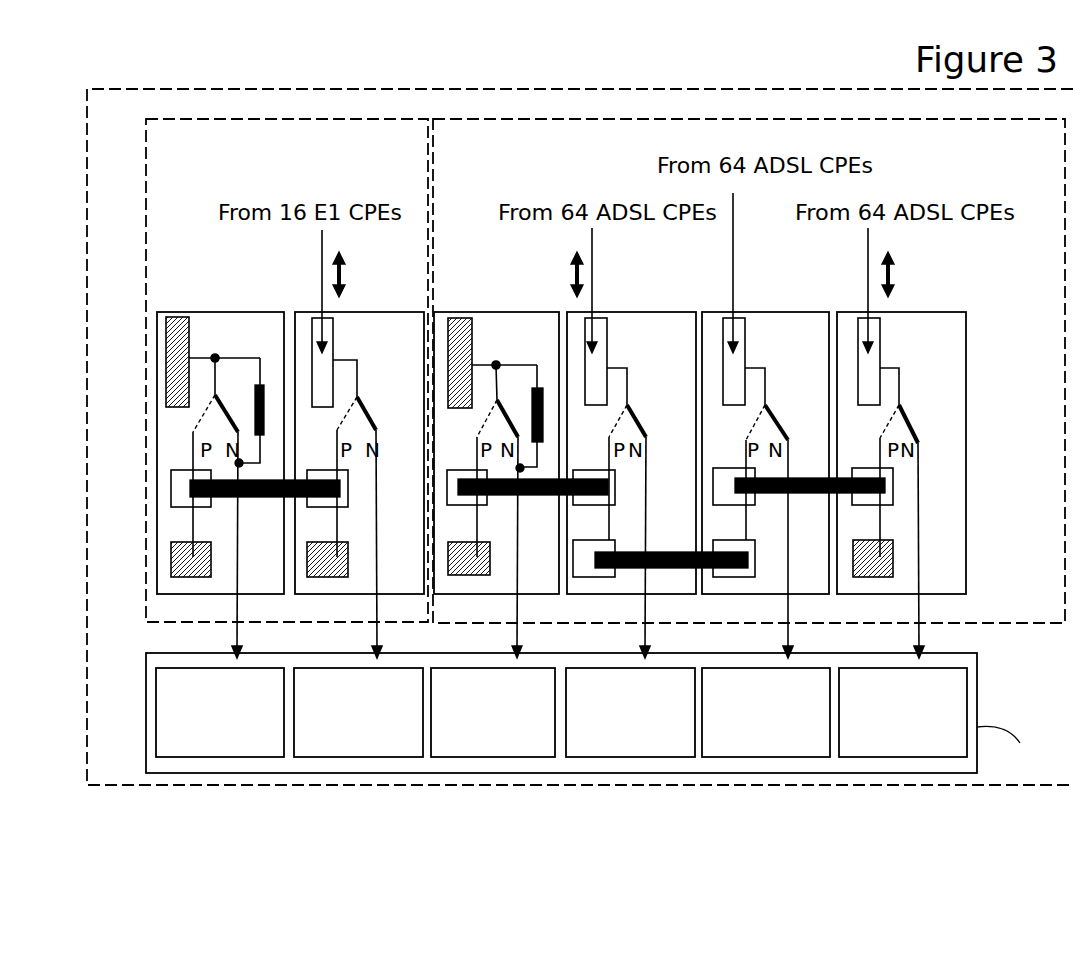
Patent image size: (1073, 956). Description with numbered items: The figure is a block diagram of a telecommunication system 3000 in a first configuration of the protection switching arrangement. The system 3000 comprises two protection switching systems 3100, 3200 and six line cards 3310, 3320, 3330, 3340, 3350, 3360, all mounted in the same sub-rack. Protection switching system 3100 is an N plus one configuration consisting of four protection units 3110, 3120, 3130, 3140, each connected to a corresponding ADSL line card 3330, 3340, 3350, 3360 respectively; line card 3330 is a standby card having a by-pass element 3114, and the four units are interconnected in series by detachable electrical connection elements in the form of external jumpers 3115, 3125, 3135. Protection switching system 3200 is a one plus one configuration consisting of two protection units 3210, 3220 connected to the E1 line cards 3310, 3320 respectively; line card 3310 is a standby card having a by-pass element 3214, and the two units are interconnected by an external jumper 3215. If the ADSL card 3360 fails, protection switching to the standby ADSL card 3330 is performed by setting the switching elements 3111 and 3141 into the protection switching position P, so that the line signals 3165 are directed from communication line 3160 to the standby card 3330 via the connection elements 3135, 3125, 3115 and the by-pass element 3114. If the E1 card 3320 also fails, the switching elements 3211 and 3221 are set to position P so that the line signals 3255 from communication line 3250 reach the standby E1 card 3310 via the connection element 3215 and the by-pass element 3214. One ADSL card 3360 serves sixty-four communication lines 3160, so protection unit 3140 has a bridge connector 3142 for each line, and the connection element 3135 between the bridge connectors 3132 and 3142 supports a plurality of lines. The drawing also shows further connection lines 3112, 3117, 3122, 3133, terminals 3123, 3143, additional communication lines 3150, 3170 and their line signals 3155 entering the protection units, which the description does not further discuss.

The telecommunication system 3000 is at (543, 89).
The protection switching system 3100 is at (1003, 623).
The protection switching system 3200 is at (146, 590).
The protection unit 3110 is at (457, 310).
The protection unit 3120 is at (667, 310).
The protection unit 3130 is at (756, 310).
The protection unit 3140 is at (935, 310).
The protection unit 3210 is at (265, 310).
The protection unit 3220 is at (370, 310).
The switching element 3211 is at (222, 398).
The by-pass element 3214 is at (266, 415).
The external jumper 3215 is at (253, 497).
The switching element 3221 is at (370, 398).
The communication line 3250 is at (322, 257).
The line signals 3255 is at (343, 282).
The switching element 3111 is at (501, 438).
The ground connection line 3112 is at (475, 467).
The by-pass element 3114 is at (540, 412).
The external jumper 3115 is at (528, 496).
The connection line to standby ADSL card 3117 is at (518, 638).
The connection line 3122 is at (605, 467).
The bus terminal 3123 is at (590, 540).
The external jumper 3125 is at (663, 568).
The bridge connector 3132 is at (680, 447).
The bus connection 3133 is at (715, 552).
The external jumper 3135 is at (802, 493).
The switching element 3141 is at (905, 438).
The bridge connector 3142 is at (895, 490).
The ground terminal 3143 is at (880, 540).
The ADSL subscriber line 3150 is at (592, 283).
The bidirectional ADSL signal 3155 is at (573, 277).
The communication line 3160 is at (867, 283).
The line signals 3165 is at (897, 283).
The ADSL subscriber line 3170 is at (735, 275).
The line card 3310 is at (247, 757).
The line card 3320 is at (382, 757).
The line card 3330 is at (516, 757).
The line card 3340 is at (648, 757).
The line card 3350 is at (798, 757).
The line card 3360 is at (930, 757).